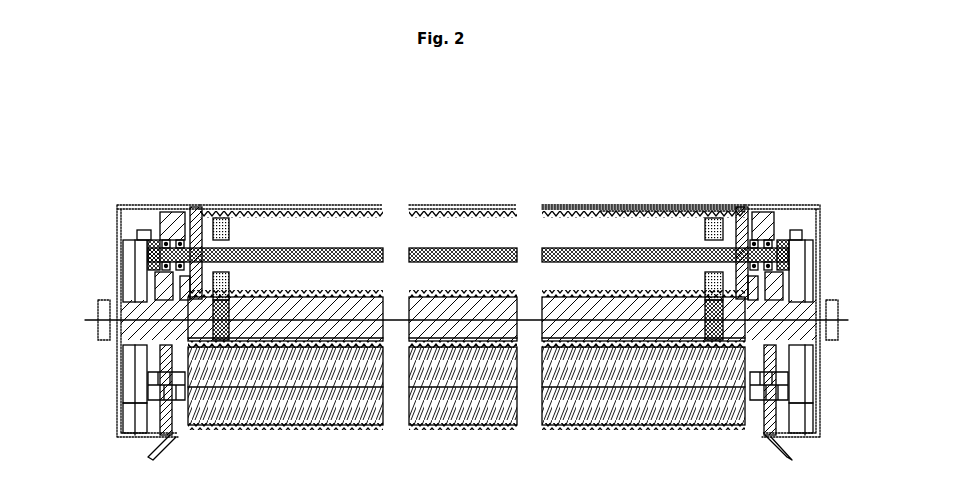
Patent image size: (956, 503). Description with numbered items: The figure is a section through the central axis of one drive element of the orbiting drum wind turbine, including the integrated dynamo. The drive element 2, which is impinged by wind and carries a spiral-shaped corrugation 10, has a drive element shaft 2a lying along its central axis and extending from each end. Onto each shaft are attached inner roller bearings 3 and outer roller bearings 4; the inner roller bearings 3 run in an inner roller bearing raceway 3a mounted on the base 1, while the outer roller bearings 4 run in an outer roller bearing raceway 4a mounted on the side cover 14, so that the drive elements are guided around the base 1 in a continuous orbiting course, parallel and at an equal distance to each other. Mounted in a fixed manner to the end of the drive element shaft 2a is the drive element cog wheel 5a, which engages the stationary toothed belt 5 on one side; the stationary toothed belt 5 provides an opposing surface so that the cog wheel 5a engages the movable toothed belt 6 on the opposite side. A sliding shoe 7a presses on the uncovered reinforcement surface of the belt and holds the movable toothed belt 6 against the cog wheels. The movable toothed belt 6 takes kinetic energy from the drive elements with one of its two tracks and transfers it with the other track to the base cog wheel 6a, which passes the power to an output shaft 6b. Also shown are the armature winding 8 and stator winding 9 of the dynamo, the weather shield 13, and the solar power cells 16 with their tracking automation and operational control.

The base 1 is at (299, 297).
The drive element 2 is at (263, 211).
The drive element shaft 2a is at (118, 257).
The inner roller bearing 3 is at (181, 207).
The inner roller bearing raceway 3a is at (118, 280).
The outer roller bearing 4 is at (788, 243).
The outer roller bearing raceway 4a is at (768, 230).
The stationary toothed belt 5 is at (800, 277).
The drive element cog wheel 5a is at (152, 240).
The movable toothed belt 6 is at (130, 208).
The base cog wheel 6a is at (800, 350).
The output shaft 6b is at (113, 340).
The sliding shoe 7a is at (142, 228).
The armature winding 8 is at (715, 218).
The stator winding 9 is at (700, 288).
The spiral-shaped corrugation 10 is at (332, 207).
The weather shield 13 is at (580, 205).
The side cover 14 is at (117, 222).
The solar power cells 16 is at (651, 205).